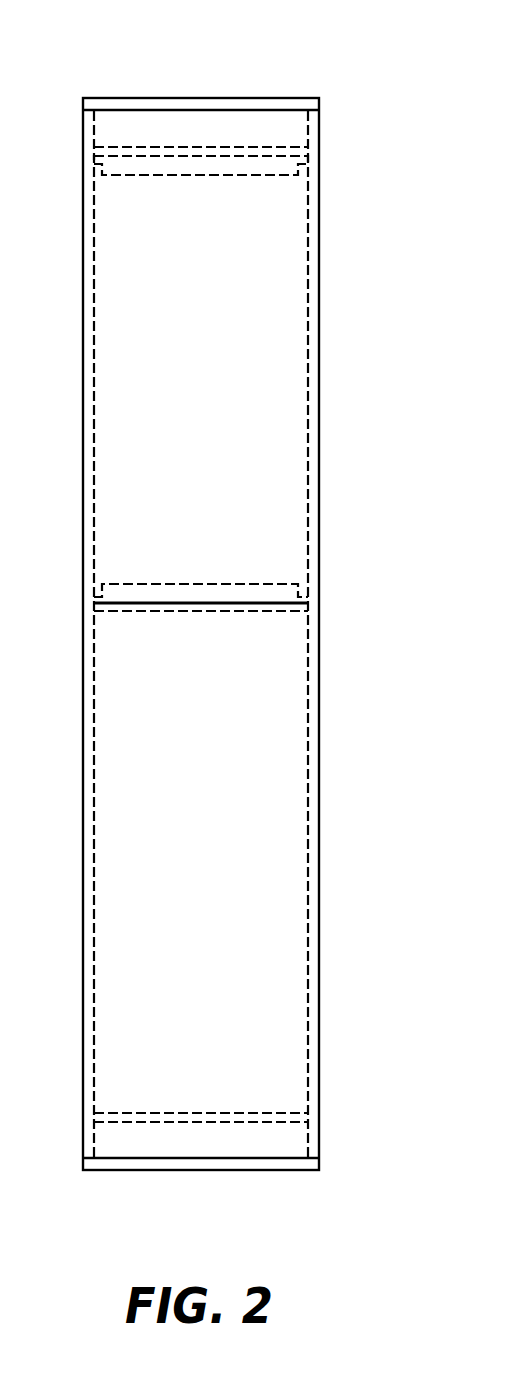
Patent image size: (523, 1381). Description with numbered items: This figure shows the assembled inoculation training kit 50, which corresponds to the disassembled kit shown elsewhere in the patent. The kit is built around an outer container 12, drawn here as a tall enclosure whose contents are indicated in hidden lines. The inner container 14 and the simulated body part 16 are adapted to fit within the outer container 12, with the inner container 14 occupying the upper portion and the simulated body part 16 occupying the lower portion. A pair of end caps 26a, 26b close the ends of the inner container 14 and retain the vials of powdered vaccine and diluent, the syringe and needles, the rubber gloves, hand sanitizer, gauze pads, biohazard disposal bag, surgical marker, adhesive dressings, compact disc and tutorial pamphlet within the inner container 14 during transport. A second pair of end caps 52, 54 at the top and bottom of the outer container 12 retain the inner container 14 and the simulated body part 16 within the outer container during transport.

The assembled inoculation training kit 50 is at (251, 619).
The end cap 52 is at (135, 98).
The end cap 54 is at (287, 1170).
The outer container 12 is at (320, 408).
The inner container 14 is at (258, 335).
The simulated body part 16 is at (237, 787).
The end cap 26a is at (262, 168).
The end cap 26b is at (260, 593).